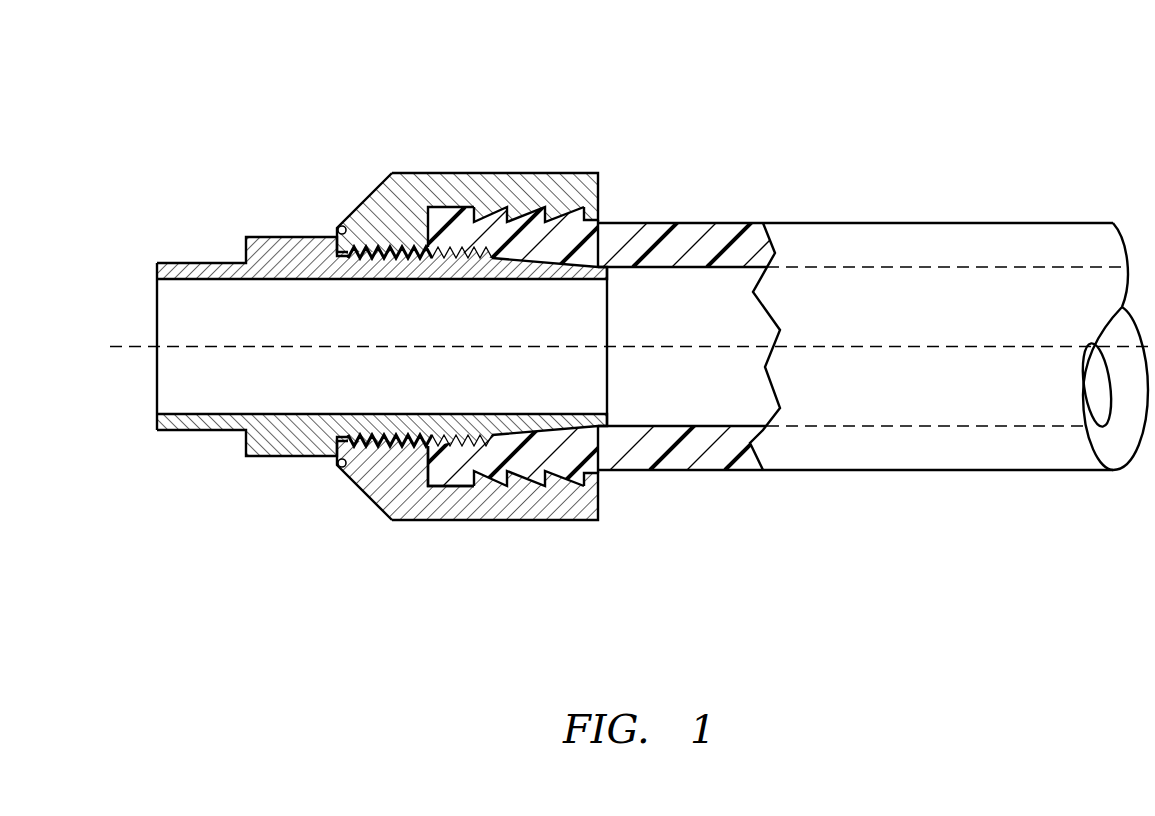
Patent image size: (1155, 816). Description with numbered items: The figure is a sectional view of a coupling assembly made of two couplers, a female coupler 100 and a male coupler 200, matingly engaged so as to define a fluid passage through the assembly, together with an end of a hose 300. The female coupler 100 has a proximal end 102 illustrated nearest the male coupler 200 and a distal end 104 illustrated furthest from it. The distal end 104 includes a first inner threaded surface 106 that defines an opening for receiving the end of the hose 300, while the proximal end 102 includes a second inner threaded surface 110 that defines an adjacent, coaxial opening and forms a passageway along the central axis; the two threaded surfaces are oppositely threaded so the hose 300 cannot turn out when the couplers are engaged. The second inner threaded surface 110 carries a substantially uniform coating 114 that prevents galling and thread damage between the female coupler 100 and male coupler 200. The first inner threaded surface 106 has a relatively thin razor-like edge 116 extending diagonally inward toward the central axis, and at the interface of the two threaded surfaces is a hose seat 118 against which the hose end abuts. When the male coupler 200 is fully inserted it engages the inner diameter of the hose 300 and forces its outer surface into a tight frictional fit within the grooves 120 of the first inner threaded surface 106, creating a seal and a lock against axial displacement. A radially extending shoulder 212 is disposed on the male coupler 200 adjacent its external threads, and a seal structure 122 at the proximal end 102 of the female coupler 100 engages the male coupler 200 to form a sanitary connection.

The female coupler 100 is at (922, 86).
The proximal end 102 is at (368, 500).
The distal end 104 is at (573, 520).
The first inner threaded surface 106 is at (475, 474).
The second inner threaded surface 110 is at (357, 240).
The coating 114 is at (398, 240).
The razor-like edge 116 is at (547, 240).
The hose seat 118 is at (430, 478).
The grooves 120 is at (505, 213).
The seal structure 122 is at (338, 464).
The male coupler 200 is at (190, 262).
The radially extending shoulder 212 is at (333, 229).
The hose 300 is at (928, 223).